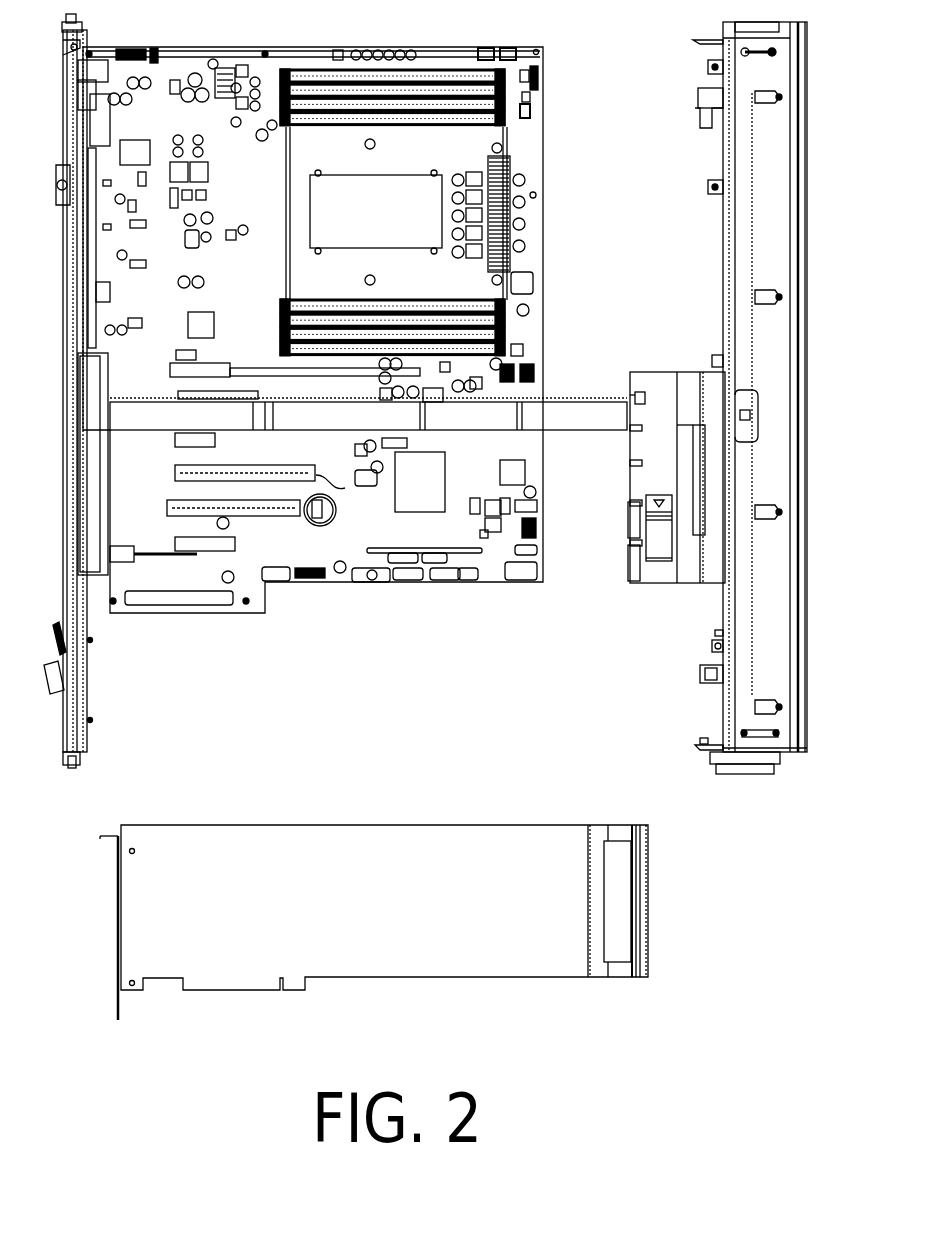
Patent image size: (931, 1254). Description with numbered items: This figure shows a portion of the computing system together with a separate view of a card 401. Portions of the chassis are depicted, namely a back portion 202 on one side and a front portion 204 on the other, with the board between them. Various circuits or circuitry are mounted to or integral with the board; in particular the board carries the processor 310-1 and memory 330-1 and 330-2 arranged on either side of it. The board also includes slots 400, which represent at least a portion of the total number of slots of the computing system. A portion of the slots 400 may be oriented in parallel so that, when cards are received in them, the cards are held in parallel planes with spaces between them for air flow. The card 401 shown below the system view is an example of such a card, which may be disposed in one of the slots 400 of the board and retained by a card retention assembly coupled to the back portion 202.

The back portion 202 is at (90, 665).
The front portion 204 is at (720, 700).
The processor 310-1 is at (376, 212).
The memory 330-1 is at (505, 327).
The memory 330-2 is at (505, 127).
The slots 400 is at (284, 551).
The card 401 is at (343, 825).